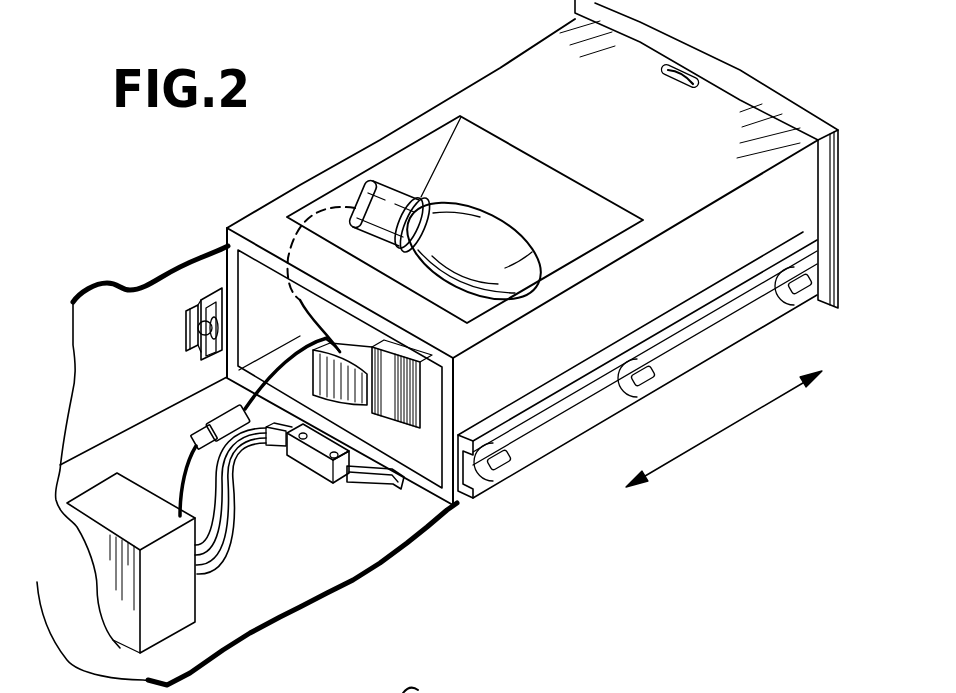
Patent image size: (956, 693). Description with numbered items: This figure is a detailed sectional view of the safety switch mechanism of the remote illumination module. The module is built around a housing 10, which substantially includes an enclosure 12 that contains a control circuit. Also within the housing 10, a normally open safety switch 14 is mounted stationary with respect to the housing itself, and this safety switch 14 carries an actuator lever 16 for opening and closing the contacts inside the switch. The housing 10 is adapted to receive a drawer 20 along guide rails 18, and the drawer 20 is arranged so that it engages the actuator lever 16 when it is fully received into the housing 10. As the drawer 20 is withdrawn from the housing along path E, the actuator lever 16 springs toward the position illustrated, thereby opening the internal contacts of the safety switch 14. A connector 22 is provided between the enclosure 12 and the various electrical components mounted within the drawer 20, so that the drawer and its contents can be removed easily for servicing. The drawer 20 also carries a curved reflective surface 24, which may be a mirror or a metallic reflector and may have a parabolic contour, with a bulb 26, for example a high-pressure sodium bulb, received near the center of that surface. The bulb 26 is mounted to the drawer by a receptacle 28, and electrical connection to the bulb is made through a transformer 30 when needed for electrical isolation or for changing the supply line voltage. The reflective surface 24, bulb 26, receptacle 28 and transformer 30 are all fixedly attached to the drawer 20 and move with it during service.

The housing 10 is at (152, 310).
The enclosure 12 is at (182, 593).
The safety switch 14 is at (315, 465).
The actuator lever 16 is at (370, 474).
The guide rails 18 is at (220, 290).
The drawer 20 is at (517, 90).
The connector 22 is at (213, 410).
The curved reflective surface 24 is at (463, 153).
The bulb 26 is at (503, 267).
The receptacle 28 is at (372, 181).
The transformer 30 is at (362, 413).
The path E is at (724, 429).